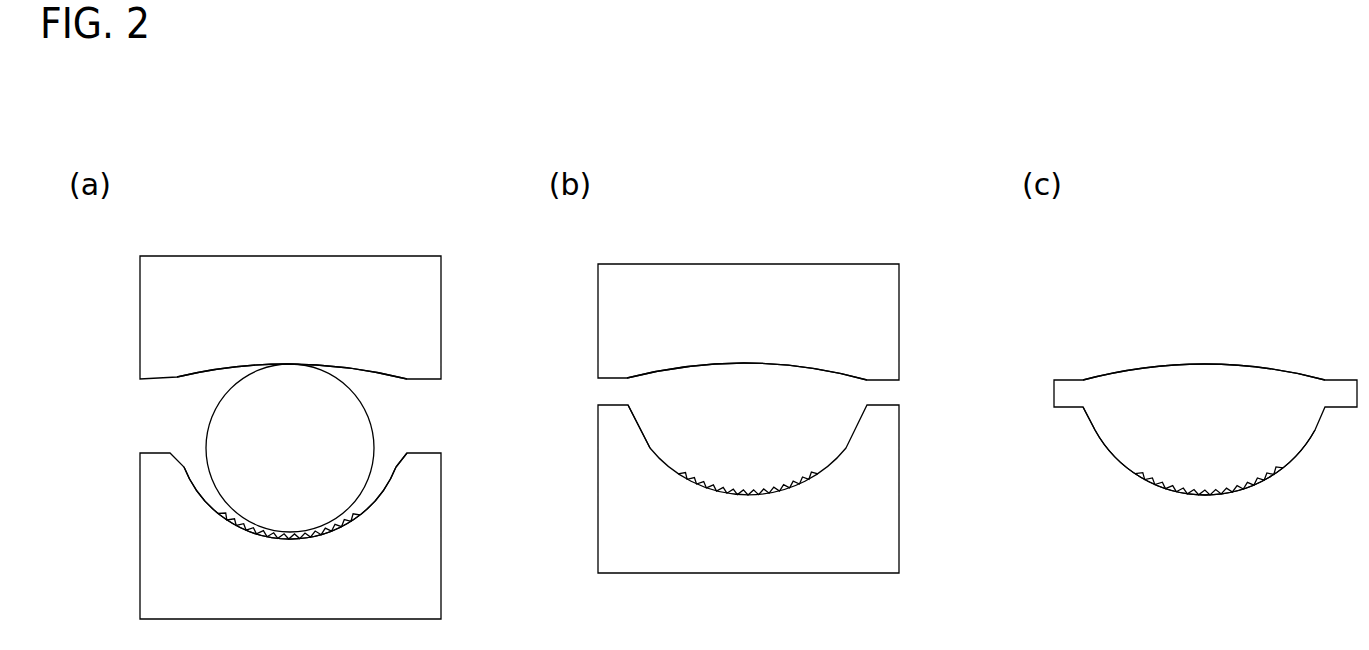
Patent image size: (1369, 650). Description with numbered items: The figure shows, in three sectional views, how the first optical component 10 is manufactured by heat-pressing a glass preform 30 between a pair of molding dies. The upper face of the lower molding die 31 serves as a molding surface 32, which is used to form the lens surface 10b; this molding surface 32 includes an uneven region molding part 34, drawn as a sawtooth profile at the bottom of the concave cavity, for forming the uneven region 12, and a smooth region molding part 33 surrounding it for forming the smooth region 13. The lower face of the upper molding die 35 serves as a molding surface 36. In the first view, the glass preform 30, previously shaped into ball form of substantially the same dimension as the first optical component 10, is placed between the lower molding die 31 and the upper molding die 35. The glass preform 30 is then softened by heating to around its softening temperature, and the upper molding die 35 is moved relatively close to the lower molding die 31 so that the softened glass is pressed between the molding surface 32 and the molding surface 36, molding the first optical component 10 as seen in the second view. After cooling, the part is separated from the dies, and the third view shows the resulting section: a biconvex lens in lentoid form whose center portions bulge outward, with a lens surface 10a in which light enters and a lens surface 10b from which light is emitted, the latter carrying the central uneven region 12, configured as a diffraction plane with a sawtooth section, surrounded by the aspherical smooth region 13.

The first optical component 10 is at (898, 392).
The lens surface 10a is at (1293, 455).
The lens surface 10b is at (1187, 363).
The uneven region 12 is at (1182, 490).
The smooth region 13 is at (1107, 447).
The glass preform 30 is at (207, 420).
The lower molding die 31 is at (138, 568).
The molding surface 32 is at (393, 473).
The smooth region molding part 33 is at (377, 487).
The uneven region molding part 34 is at (318, 520).
The upper molding die 35 is at (138, 328).
The molding surface 36 is at (352, 373).